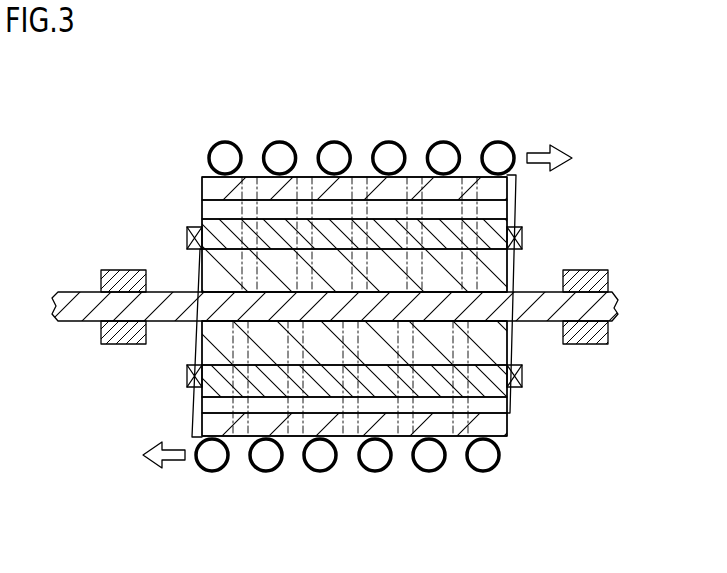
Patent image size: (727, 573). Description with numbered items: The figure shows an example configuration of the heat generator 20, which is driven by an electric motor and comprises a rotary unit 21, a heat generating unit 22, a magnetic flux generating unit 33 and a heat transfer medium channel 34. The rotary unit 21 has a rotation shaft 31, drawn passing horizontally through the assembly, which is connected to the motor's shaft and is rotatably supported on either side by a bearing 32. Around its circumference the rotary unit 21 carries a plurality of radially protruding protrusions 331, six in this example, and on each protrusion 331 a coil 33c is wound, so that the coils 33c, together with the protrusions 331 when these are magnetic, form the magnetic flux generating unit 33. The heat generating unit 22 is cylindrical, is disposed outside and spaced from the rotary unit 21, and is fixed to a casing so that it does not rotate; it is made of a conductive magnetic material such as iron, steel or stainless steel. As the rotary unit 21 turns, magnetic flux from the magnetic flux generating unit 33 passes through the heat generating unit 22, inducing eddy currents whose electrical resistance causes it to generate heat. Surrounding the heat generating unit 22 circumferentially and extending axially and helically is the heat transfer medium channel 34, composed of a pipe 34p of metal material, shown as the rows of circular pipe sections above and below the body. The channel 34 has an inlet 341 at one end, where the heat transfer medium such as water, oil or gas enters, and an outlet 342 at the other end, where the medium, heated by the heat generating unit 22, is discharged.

The heat generator 20 is at (199, 117).
The rotary unit 21 is at (497, 275).
The heat generating unit 22 is at (500, 192).
The rotation shaft 31 is at (62, 292).
The bearing 32 is at (608, 278).
The magnetic flux generating unit 33 is at (284, 299).
The coil 33c is at (185, 236).
The protrusion 331 is at (513, 210).
The heat transfer medium channel 34 is at (355, 256).
The pipe 34p is at (440, 71).
The inlet 341 is at (205, 472).
The outlet 342 is at (502, 138).